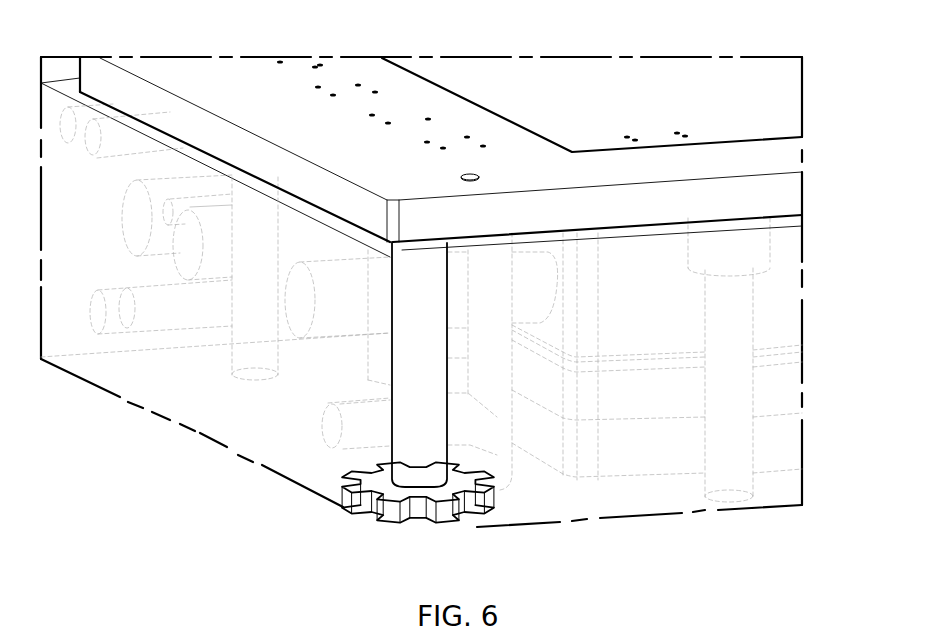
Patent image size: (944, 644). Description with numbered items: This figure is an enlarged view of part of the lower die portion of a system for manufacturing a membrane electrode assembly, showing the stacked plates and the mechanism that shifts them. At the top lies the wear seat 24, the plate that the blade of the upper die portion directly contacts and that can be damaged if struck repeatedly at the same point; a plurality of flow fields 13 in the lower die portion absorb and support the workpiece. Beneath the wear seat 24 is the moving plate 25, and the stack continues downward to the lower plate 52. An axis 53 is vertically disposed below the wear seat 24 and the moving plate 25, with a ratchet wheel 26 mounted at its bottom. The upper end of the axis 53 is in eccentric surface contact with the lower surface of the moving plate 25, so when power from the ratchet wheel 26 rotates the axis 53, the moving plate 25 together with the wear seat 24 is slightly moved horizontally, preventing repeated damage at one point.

The flow fields 13 is at (413, 112).
The wear seat 24 is at (758, 163).
The moving plate 25 is at (737, 198).
The ratchet wheel 26 is at (391, 507).
The lower plate 52 is at (205, 395).
The axis 53 is at (420, 413).